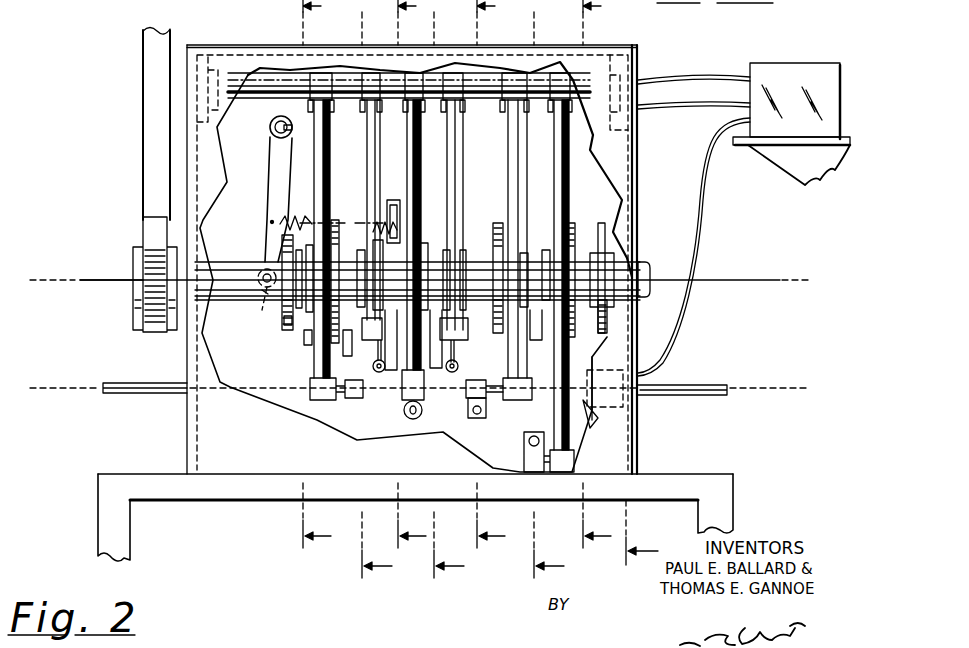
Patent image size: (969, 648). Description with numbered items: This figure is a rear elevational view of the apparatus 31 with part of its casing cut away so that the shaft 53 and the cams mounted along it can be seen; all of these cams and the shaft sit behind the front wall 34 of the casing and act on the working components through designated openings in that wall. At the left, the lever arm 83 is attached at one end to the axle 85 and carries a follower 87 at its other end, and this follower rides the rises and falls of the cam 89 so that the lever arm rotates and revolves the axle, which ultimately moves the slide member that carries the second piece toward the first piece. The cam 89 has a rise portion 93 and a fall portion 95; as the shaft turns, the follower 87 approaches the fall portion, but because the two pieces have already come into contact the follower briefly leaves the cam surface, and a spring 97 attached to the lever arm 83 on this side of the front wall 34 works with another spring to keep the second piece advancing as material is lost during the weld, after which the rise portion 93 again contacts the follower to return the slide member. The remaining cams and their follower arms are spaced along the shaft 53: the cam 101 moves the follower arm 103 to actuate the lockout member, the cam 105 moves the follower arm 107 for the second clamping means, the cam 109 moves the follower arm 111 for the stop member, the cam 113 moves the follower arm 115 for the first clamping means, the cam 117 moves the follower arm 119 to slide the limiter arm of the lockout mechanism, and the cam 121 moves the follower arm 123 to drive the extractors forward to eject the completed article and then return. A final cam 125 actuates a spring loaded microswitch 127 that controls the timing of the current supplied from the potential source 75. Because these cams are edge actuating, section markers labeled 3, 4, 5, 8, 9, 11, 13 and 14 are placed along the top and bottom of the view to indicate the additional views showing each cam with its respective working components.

The apparatus 31 is at (95, 63).
The front wall 34 is at (608, 180).
The shaft 53 is at (644, 260).
The potential source 75 is at (738, 55).
The lever arm 83 is at (272, 174).
The axle 85 is at (270, 128).
The follower 87 is at (262, 292).
The cam 89 is at (283, 320).
The rise portion 93 is at (272, 288).
The fall portion 95 is at (274, 262).
The spring 97 is at (294, 218).
The cam 101 is at (305, 340).
The follower arm 103 is at (314, 160).
The cam 105 is at (350, 312).
The follower arm 107 is at (372, 168).
The cam 109 is at (430, 232).
The follower arm 111 is at (412, 172).
The cam 113 is at (452, 308).
The follower arm 115 is at (456, 166).
The cam 117 is at (496, 332).
The follower arm 119 is at (510, 192).
The cam 121 is at (552, 340).
The follower arm 123 is at (556, 164).
The cam 125 is at (592, 222).
The spring loaded microswitch 127 is at (580, 420).
The section line 3- 3 is at (309, 274).
The section line 4- 4 is at (368, 295).
The section line 5- 5 is at (404, 274).
The section line 8- 8 is at (440, 295).
The section line 9- 9 is at (483, 274).
The section line 11- 11 is at (539, 295).
The section line 13- 13 is at (586, 274).
The section line 14- 14 is at (630, 532).